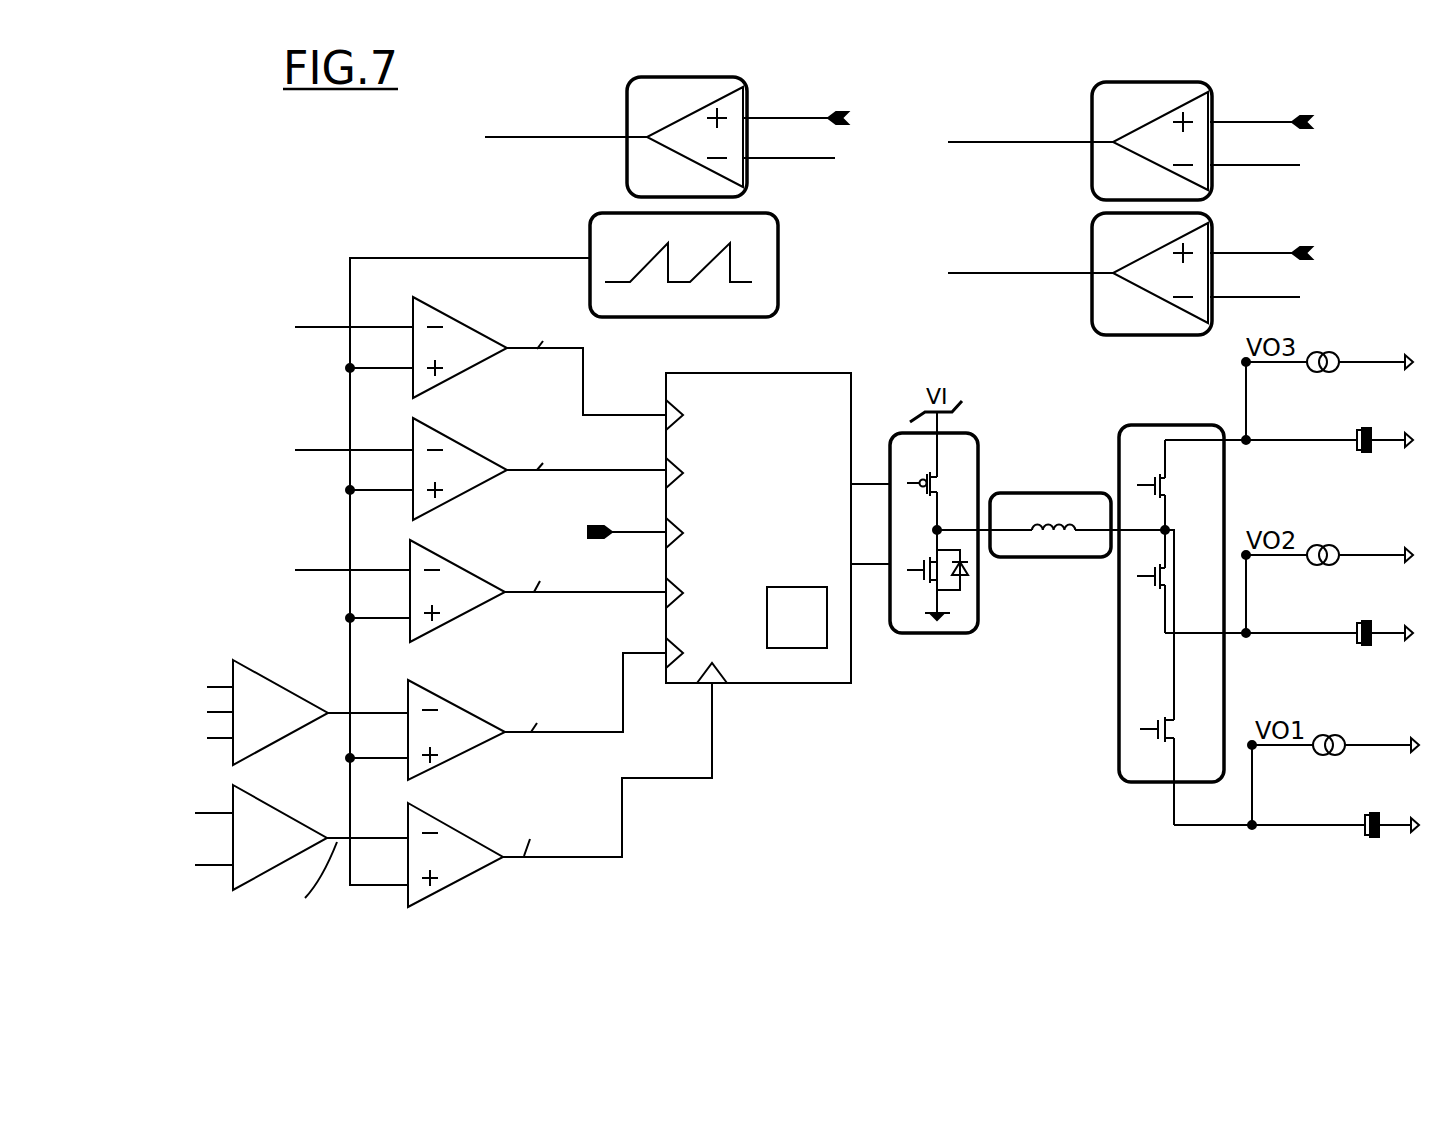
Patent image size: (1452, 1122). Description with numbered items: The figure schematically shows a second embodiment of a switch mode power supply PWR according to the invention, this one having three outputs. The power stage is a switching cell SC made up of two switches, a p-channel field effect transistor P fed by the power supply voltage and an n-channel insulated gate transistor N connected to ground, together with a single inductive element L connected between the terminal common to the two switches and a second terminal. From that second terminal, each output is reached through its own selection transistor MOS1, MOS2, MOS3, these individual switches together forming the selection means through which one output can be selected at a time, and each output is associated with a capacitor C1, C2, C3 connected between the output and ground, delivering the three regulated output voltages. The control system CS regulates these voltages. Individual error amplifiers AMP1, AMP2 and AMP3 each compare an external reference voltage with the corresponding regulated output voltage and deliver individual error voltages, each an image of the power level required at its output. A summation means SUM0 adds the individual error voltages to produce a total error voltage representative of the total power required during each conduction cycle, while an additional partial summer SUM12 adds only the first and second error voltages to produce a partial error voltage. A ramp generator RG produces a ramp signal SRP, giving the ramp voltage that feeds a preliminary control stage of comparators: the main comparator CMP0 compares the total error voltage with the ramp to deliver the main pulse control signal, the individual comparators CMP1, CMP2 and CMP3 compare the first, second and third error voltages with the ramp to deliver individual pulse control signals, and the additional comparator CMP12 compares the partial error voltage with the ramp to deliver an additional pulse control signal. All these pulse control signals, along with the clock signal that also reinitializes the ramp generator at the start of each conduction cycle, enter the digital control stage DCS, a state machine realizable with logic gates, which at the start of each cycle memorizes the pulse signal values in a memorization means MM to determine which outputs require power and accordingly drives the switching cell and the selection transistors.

The switch mode power supply PWR is at (273, 227).
The control system CS is at (378, 208).
The individual comparator CMP3 is at (465, 308).
The individual comparator CMP2 is at (465, 428).
The individual comparator CMP1 is at (457, 558).
The main comparator CMP0 is at (455, 698).
The additional comparator CMP12 is at (465, 809).
The summation means SUM0 is at (210, 712).
The additional summation means SUM12 is at (250, 837).
The digital control stage DCS is at (778, 528).
The memorization means MM is at (797, 617).
The p-channel field effect transistor P is at (922, 472).
The n-channel insulated gate field effect transistor N is at (937, 585).
The inductive element L is at (1055, 525).
The switching cell SC is at (1050, 672).
The selection transistor MOS3 is at (1127, 485).
The selection transistor MOS2 is at (1127, 581).
The selection transistor MOS1 is at (1132, 677).
The capacitor C3 is at (1289, 426).
The capacitor C2 is at (1289, 620).
The capacitor C1 is at (1296, 811).
The individual error amplifier AMP3 is at (748, 95).
The individual error amplifier AMP1 is at (1213, 97).
The individual error amplifier AMP2 is at (1213, 232).
The ramp generator RG is at (715, 265).
The ramp signal SRP is at (634, 276).